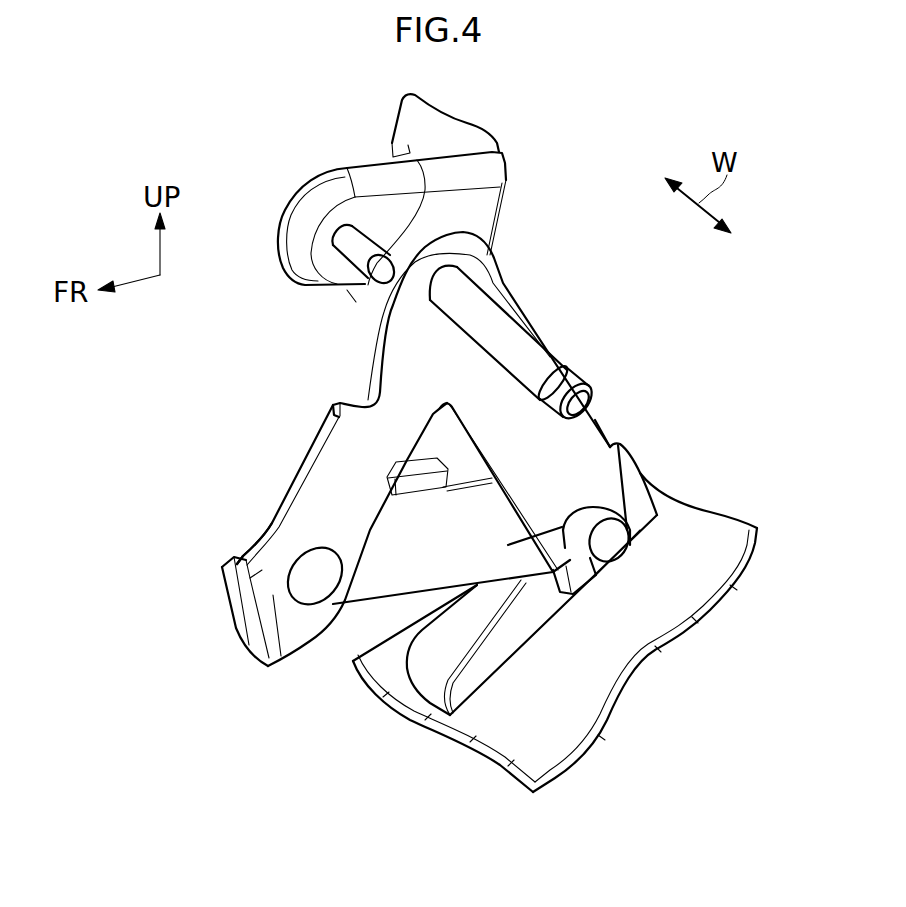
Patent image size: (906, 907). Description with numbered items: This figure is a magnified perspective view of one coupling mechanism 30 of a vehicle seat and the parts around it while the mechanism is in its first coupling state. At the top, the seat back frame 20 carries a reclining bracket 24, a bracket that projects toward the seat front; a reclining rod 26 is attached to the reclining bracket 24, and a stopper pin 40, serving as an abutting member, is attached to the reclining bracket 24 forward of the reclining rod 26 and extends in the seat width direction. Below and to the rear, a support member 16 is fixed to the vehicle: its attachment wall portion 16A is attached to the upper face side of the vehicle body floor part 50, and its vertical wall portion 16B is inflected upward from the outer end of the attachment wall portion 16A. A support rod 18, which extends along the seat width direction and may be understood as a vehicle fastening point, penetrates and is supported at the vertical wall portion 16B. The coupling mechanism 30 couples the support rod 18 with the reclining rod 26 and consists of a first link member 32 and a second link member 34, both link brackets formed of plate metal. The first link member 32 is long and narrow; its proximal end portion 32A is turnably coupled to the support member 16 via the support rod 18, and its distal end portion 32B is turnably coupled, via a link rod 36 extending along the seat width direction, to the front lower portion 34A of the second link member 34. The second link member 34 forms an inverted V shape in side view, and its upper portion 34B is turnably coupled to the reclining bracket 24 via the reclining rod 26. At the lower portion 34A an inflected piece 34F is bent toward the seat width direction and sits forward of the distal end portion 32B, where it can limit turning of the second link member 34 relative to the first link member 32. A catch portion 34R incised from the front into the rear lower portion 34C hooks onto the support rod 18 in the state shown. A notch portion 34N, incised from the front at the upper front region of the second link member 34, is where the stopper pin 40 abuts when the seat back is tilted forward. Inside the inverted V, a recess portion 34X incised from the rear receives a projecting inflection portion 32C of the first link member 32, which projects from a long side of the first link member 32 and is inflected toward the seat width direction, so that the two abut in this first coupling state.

The support member 16 is at (530, 645).
The attachment wall portion 16A is at (405, 670).
The vertical wall portion 16B is at (545, 597).
The support rod 18 is at (604, 516).
The seat back frame 20 is at (562, 198).
The reclining bracket 24 is at (487, 217).
The reclining rod 26 is at (545, 357).
The coupling mechanism 30 is at (620, 429).
The first link member 32 is at (398, 609).
The proximal end portion 32A is at (572, 577).
The distal end portion 32B is at (263, 523).
The projecting inflection portion 32C is at (423, 490).
The second link member 34 is at (311, 442).
The lower portion 34A is at (290, 628).
The upper portion 34B is at (485, 280).
The lower portion 34C is at (634, 524).
The inflected piece 34F is at (237, 600).
The notch portion 34N is at (378, 386).
The catch portion 34R is at (584, 525).
The recess portion 34X is at (390, 488).
The link rod 36 is at (329, 573).
The stopper pin 40 is at (350, 254).
The vehicle body floor part 50 is at (690, 524).